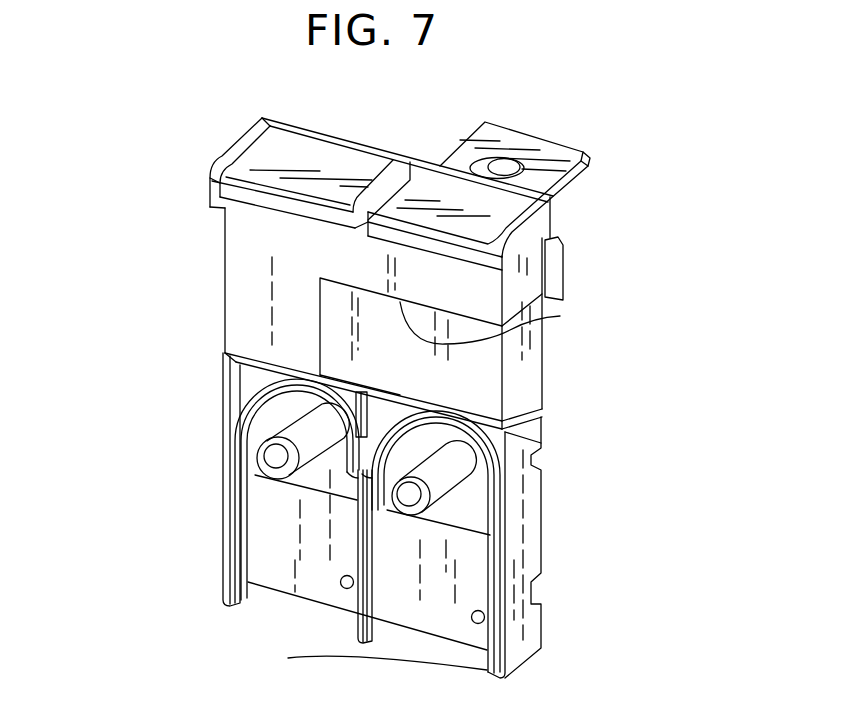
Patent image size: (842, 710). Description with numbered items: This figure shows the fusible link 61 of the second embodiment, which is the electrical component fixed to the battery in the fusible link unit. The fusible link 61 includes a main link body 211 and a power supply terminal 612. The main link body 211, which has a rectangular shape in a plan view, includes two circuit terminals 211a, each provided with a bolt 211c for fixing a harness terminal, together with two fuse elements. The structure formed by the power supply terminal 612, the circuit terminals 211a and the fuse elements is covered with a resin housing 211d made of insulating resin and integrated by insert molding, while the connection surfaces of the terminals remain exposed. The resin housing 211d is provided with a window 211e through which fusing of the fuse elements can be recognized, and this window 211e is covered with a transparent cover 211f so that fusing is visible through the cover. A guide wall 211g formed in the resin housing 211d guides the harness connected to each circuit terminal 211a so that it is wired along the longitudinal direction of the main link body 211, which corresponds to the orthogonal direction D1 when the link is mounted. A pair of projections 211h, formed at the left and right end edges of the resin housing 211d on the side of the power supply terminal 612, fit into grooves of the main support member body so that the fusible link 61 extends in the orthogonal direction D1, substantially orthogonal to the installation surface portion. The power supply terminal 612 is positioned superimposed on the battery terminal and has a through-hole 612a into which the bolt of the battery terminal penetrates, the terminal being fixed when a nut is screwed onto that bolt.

The fusible link 61 is at (183, 162).
The power supply terminal 612 is at (540, 147).
The through-hole 612a is at (583, 172).
The main link body 211 is at (213, 306).
The circuit terminals 211a is at (258, 428).
The bolts 211c is at (278, 465).
The resin housing 211d is at (262, 258).
The window 211e is at (560, 316).
The transparent cover 211f is at (475, 378).
The guide wall 211g is at (358, 630).
The projections 211h is at (566, 265).
The orthogonal direction D1 is at (667, 365).